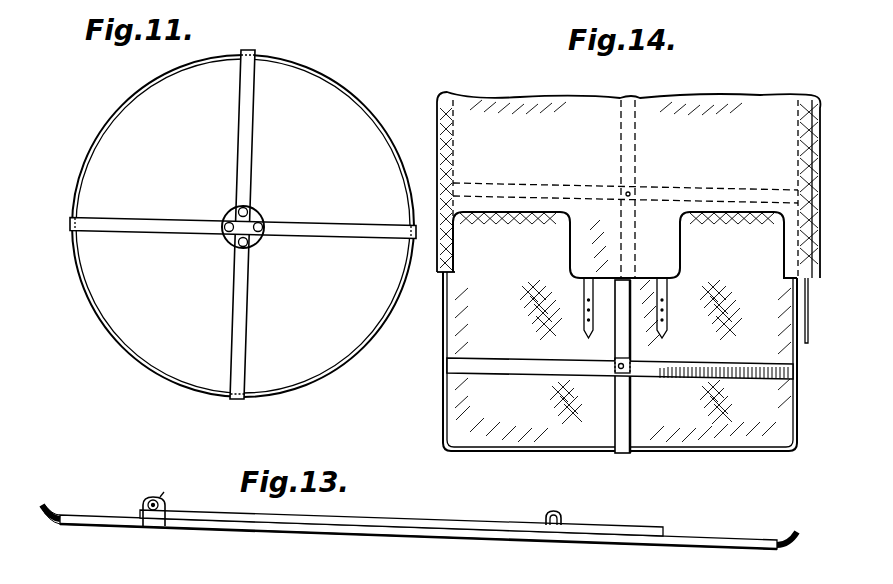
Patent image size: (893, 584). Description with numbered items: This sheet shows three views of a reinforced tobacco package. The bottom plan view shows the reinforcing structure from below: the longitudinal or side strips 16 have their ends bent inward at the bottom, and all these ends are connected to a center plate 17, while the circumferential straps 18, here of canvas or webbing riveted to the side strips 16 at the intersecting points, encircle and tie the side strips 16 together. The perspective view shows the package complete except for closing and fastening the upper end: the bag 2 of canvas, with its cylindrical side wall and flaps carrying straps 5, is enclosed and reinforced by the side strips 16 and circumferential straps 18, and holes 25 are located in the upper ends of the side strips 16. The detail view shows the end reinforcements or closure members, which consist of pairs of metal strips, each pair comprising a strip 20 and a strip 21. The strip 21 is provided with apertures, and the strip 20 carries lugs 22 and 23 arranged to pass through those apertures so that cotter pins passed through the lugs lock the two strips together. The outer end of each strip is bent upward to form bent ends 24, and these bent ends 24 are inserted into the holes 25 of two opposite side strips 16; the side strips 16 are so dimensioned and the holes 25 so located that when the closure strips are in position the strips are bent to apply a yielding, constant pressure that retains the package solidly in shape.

In FIG. 11, the side strips 16 is at (254, 50).
In FIG. 14, the side strips 16 is at (442, 328).
In FIG. 11, the center plate 17 is at (258, 212).
In FIG. 11, the circumferential straps 18 is at (342, 82).
In FIG. 14, the holes 25 is at (628, 97).
In FIG. 14, the bag 2 is at (625, 327).
In FIG. 14, the straps 5 is at (594, 293).
In FIG. 13, the strip 20 is at (355, 540).
In FIG. 13, the strip 21 is at (426, 520).
In FIG. 13, the lug 22 is at (563, 512).
In FIG. 13, the lug 23 is at (166, 499).
In FIG. 13, the bent ends 24 is at (56, 520).